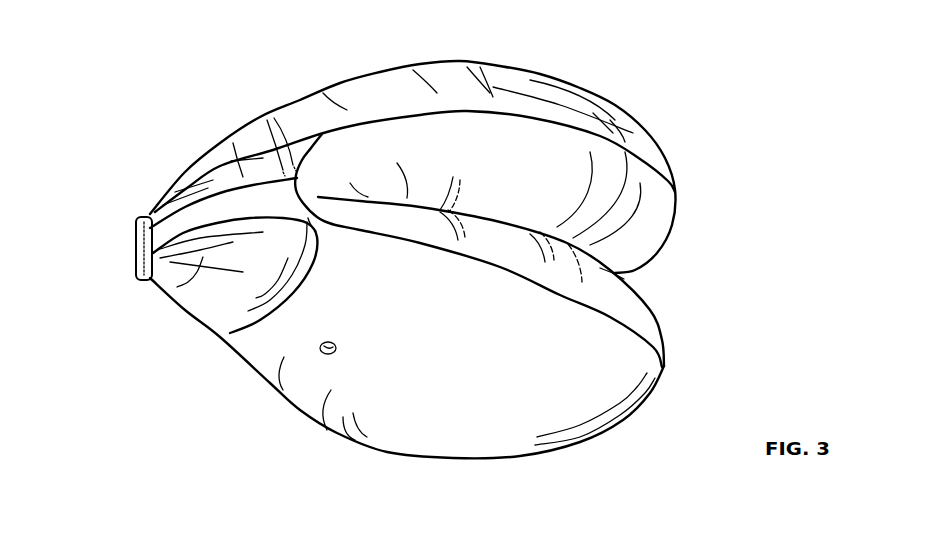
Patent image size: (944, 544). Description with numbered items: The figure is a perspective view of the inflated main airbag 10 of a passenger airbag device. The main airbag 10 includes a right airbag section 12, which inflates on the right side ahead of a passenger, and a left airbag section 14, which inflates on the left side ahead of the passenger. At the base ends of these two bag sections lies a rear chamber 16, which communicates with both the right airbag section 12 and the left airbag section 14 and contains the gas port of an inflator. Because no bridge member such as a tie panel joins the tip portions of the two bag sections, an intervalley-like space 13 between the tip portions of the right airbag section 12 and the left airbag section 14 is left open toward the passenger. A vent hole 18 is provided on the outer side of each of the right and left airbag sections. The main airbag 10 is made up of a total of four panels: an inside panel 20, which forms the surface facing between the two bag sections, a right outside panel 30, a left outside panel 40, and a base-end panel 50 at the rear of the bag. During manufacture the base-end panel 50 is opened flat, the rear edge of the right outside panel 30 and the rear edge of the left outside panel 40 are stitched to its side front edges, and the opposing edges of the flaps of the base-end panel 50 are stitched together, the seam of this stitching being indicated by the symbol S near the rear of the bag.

The main airbag 10 is at (494, 49).
The right airbag section 12 is at (560, 98).
The intervalley-like space 13 is at (628, 277).
The left airbag section 14 is at (518, 428).
The rear chamber 16 is at (213, 293).
The vent hole 18 is at (338, 350).
The inside panel 20 is at (638, 314).
The right outside panel 30 is at (370, 78).
The left outside panel 40 is at (338, 433).
The base-end panel 50 is at (218, 148).
The seam S is at (148, 214).